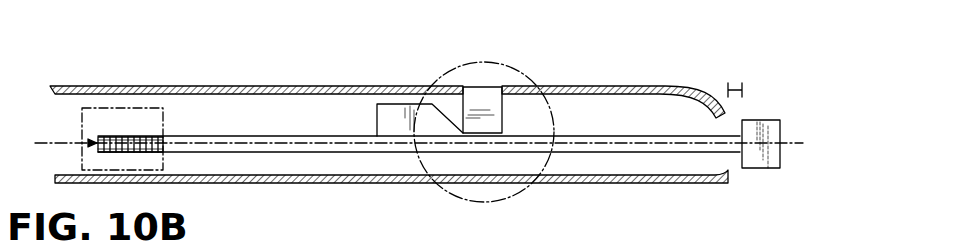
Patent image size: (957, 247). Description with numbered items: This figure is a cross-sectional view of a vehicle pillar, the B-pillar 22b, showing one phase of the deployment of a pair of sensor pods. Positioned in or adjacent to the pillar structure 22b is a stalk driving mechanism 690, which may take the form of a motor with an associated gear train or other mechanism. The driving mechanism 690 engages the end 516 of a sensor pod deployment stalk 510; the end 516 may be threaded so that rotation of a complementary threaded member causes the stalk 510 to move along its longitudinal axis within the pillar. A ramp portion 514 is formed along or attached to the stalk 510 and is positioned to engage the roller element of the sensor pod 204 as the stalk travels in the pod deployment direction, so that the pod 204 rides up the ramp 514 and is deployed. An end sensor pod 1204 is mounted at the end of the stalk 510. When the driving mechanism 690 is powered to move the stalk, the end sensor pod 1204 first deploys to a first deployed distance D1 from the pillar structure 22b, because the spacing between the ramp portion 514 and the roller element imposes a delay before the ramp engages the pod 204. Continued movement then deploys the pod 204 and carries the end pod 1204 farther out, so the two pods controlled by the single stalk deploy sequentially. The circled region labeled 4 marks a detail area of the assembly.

The B-pillar 22b is at (184, 87).
The stalk driving mechanism 690 is at (122, 118).
The end of the stalk 516 is at (108, 147).
The sensor pod deployment stalk 510 is at (258, 152).
The ramp portion 514 is at (421, 102).
The sensor pod 204 is at (483, 97).
The detail view circle 4 is at (500, 201).
The first deployed distance D1 is at (735, 86).
The end sensor pod 1204 is at (767, 128).